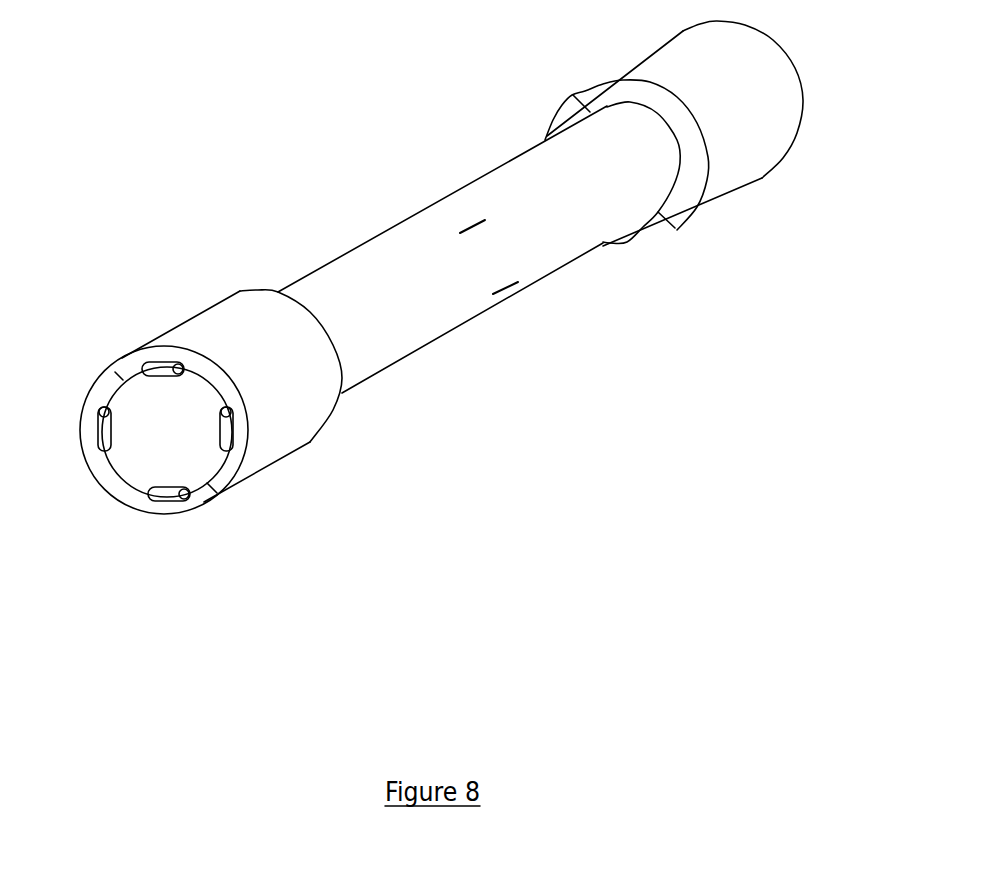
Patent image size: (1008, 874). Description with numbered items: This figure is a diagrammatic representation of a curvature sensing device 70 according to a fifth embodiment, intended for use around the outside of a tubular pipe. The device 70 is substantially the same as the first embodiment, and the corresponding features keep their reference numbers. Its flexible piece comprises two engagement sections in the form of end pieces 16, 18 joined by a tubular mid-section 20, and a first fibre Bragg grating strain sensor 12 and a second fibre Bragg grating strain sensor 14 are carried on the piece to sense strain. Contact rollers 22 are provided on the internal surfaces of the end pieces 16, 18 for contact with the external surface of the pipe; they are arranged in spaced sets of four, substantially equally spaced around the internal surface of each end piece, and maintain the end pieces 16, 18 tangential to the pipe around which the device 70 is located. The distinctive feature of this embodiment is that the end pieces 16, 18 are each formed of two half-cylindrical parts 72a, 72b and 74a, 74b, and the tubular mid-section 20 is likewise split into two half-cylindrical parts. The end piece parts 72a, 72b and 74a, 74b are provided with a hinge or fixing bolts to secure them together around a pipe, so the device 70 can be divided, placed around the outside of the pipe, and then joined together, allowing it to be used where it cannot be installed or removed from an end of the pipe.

The first fibre Bragg grating strain sensor 12 is at (466, 217).
The second fibre Bragg grating strain sensor 14 is at (510, 296).
The end piece 16 is at (270, 491).
The end piece 18 is at (736, 203).
The tubular mid-section 20 is at (533, 178).
The contact rollers 22 is at (104, 426).
The curvature sensing device 70 is at (510, 369).
The half-cylindrical part 72a is at (293, 425).
The half-cylindrical part 72b is at (122, 490).
The half-cylindrical part 74a is at (763, 147).
The half-cylindrical part 74b is at (553, 127).